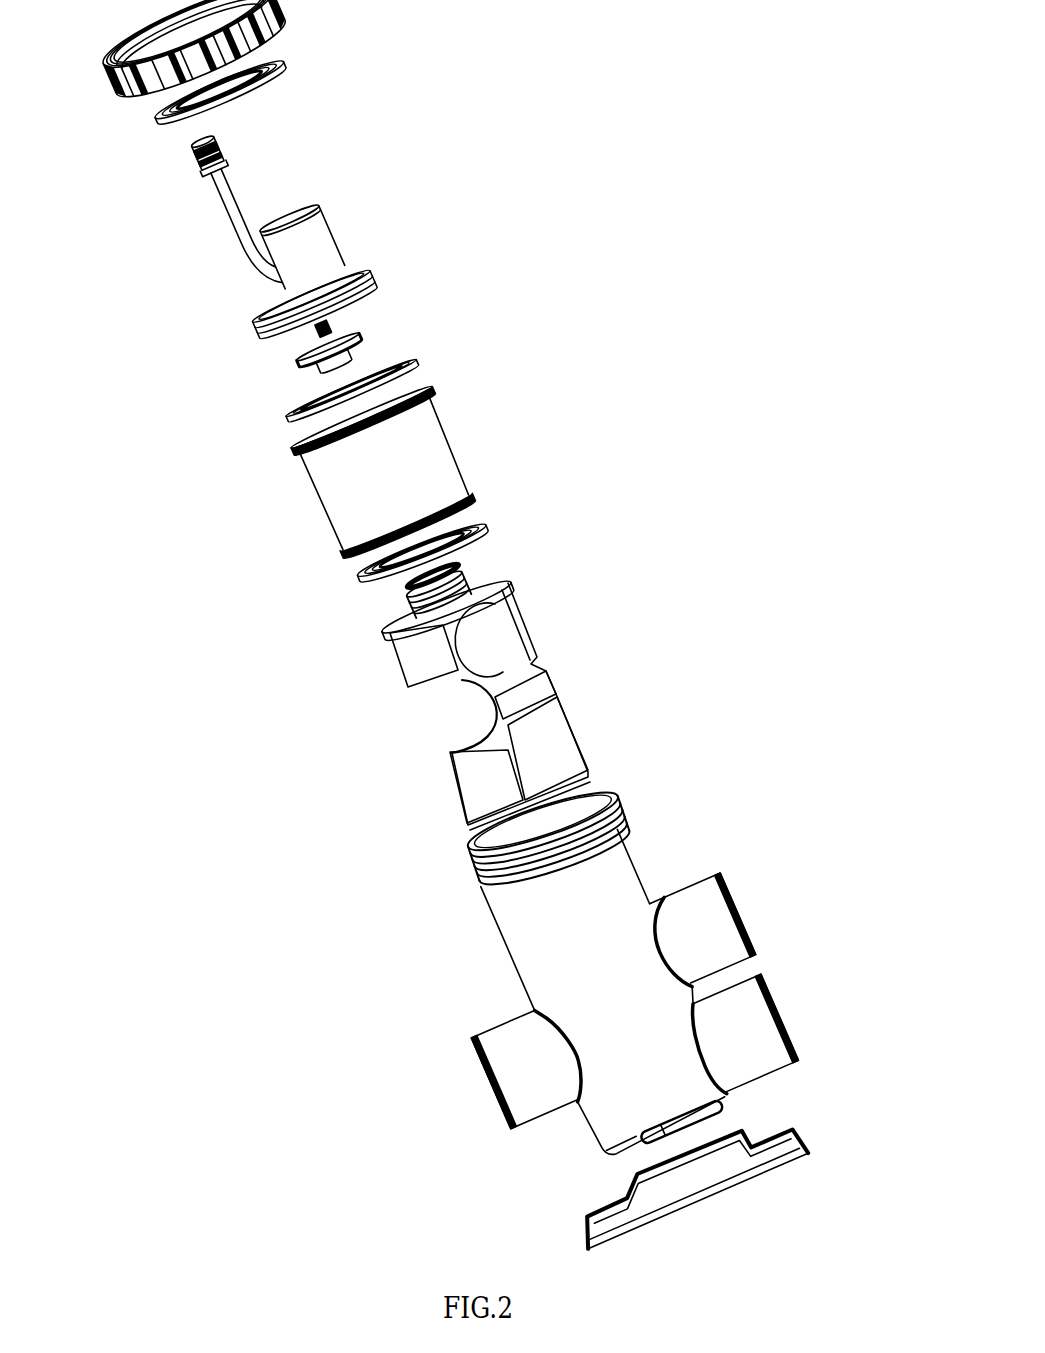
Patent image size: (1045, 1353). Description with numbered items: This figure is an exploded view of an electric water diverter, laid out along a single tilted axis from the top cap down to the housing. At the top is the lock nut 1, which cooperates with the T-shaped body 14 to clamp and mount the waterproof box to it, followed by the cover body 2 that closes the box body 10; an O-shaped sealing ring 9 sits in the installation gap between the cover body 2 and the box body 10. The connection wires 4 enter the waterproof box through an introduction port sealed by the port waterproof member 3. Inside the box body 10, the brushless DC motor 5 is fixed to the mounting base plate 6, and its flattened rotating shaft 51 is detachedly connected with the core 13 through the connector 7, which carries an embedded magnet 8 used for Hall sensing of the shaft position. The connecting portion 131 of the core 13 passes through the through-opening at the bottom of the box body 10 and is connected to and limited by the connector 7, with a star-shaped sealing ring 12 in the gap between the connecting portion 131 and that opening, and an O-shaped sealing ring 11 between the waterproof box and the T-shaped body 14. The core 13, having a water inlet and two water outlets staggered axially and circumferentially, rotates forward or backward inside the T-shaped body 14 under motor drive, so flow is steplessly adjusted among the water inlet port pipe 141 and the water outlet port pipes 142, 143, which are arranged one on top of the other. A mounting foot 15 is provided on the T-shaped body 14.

The lock nut 1 is at (118, 95).
The cover body 2 is at (160, 125).
The port waterproof member 3 is at (193, 165).
The connection wires 4 is at (233, 227).
The brushless DC motor 5 is at (280, 287).
The rotating shaft 51 is at (318, 333).
The mounting base plate 6 is at (260, 327).
The connector 7 is at (308, 367).
The magnet 8 is at (290, 410).
The O-shaped sealing ring 9 is at (300, 448).
The box body 10 is at (317, 482).
The O-shaped sealing ring 11 is at (357, 575).
The star-shaped sealing ring 12 is at (410, 590).
The core 13 is at (400, 662).
The connecting portion 131 is at (413, 608).
The T-shaped body 14 is at (505, 935).
The water inlet port pipe 141 is at (490, 1057).
The water outlet port pipe 142 is at (713, 912).
The water outlet port pipe 143 is at (777, 1042).
The mounting foot 15 is at (587, 1247).